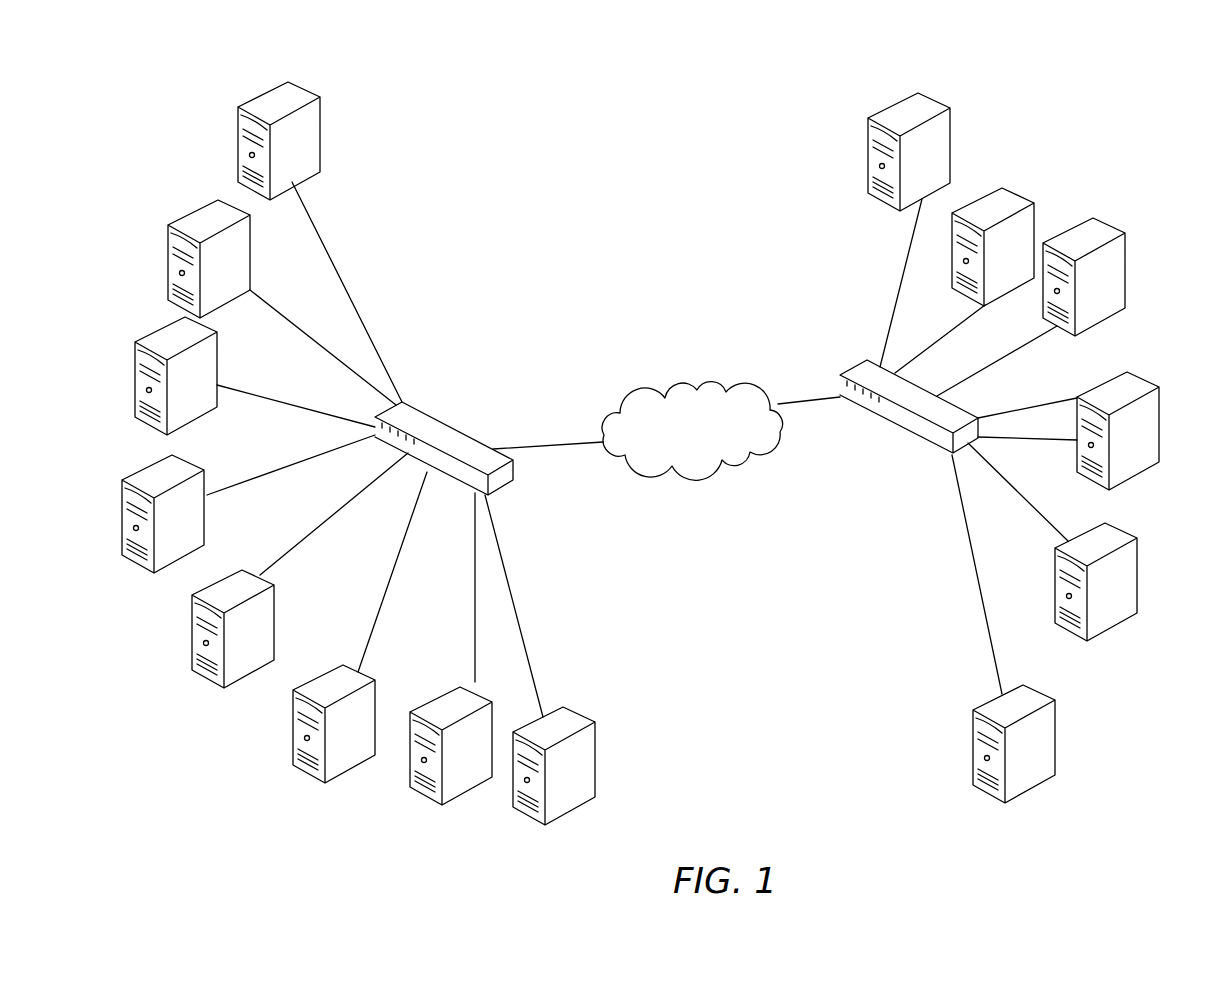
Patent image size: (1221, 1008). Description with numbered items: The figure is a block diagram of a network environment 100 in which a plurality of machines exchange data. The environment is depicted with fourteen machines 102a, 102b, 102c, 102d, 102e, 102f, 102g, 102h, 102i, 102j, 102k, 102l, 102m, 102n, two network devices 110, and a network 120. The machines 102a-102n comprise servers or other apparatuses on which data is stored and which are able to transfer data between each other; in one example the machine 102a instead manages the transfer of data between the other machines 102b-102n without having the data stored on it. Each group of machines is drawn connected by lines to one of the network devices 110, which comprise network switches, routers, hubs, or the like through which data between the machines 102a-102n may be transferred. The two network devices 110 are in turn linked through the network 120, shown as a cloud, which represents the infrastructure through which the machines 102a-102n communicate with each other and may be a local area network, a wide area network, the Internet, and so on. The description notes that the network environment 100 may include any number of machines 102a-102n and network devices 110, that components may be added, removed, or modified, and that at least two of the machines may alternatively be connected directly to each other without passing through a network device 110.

The network environment 100 is at (646, 116).
The machine 102a is at (322, 142).
The machine 102b is at (185, 218).
The machine 102c is at (160, 333).
The machine 102d is at (145, 470).
The machine 102e is at (192, 612).
The machine 102f is at (293, 712).
The machine 102g is at (412, 781).
The machine 102h is at (514, 794).
The machine 102i is at (945, 108).
The machine 102j is at (1008, 188).
The machine 102k is at (1100, 224).
The machine 102l is at (1143, 374).
The machine 102m is at (1125, 530).
The machine 102n is at (1055, 712).
The network device 110 is at (870, 417).
The network 120 is at (680, 387).